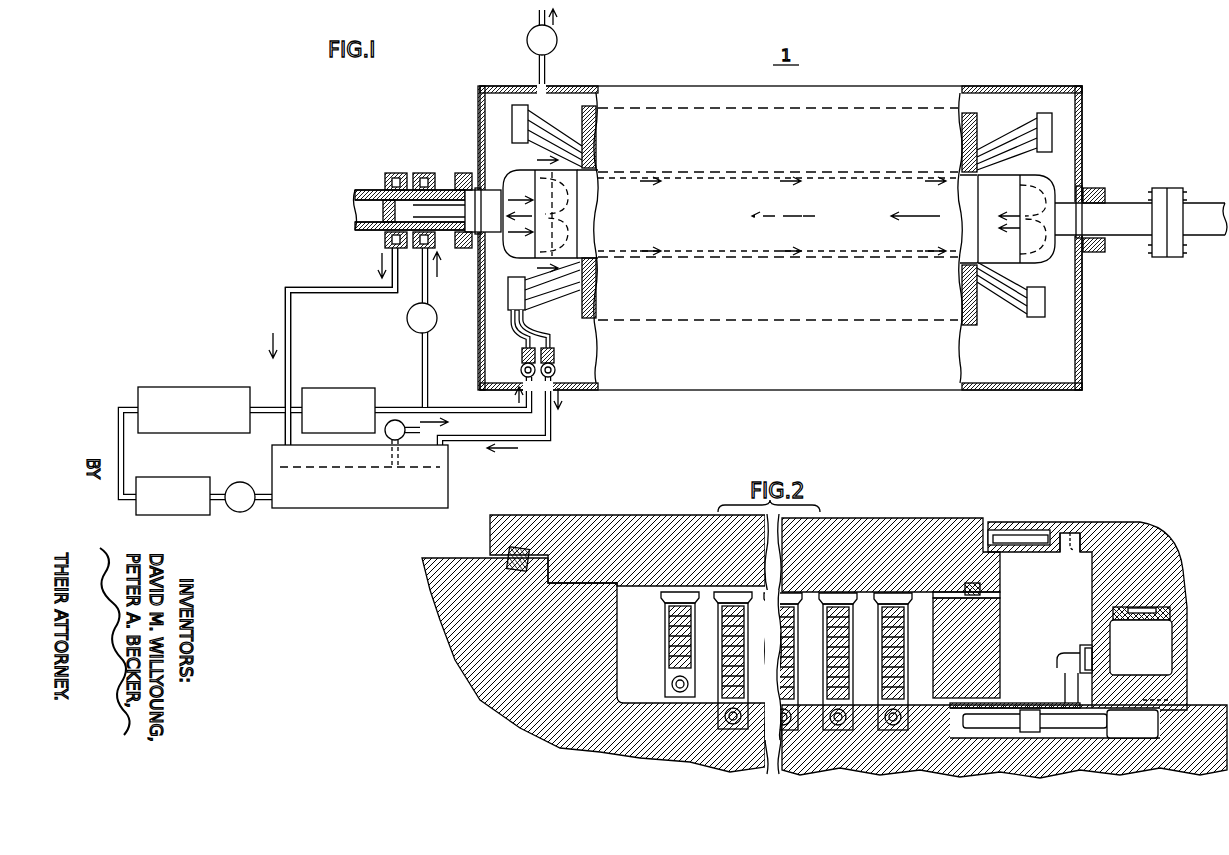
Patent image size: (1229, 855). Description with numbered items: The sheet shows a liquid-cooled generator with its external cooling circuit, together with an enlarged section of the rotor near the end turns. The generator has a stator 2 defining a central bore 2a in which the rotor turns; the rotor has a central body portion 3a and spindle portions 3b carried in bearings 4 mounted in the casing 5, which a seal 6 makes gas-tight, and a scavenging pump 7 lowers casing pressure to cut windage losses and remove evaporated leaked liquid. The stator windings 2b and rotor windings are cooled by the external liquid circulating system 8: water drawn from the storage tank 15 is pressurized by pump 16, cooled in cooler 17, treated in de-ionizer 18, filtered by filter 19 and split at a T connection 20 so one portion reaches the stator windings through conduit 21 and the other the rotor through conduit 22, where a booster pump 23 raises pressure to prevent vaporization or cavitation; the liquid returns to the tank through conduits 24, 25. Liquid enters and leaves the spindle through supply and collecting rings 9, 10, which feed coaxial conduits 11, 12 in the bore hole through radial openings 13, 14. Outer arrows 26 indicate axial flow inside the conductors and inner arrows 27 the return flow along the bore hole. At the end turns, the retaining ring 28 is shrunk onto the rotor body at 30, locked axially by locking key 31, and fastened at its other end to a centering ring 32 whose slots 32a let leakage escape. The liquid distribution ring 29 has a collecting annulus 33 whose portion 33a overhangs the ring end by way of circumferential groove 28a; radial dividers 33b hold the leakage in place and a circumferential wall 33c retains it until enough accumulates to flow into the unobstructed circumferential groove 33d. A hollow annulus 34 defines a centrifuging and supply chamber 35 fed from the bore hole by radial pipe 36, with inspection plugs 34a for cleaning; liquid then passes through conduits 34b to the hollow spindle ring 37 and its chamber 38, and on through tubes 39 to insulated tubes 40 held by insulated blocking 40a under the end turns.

In FIG. 1, the stator 2 is at (585, 318).
In FIG. 1, the central bore 2a is at (848, 260).
In FIG. 1, the stator windings 2b is at (548, 293).
In FIG. 1, the rotor body portion 3a is at (595, 195).
In FIG. 2, the rotor body portion 3a is at (463, 557).
In FIG. 1, the spindle portions 3b is at (1060, 256).
In FIG. 2, the spindle portions 3b is at (912, 706).
In FIG. 1, the locking key 31 is at (843, 177).
In FIG. 2, the locking key 31 is at (517, 547).
In FIG. 1, the bearings 4 is at (465, 172).
In FIG. 1, the casing 5 is at (478, 104).
In FIG. 1, the seal 6 is at (471, 256).
In FIG. 1, the scavenging pump 7 is at (557, 41).
In FIG. 1, the external liquid circulating system 8 is at (240, 461).
In FIG. 1, the supply ring 9 is at (422, 179).
In FIG. 1, the collecting ring 10 is at (392, 178).
In FIG. 1, the coaxial conduit 11 is at (444, 238).
In FIG. 1, the coaxial conduit 12 is at (445, 205).
In FIG. 1, the radial opening 13 is at (414, 178).
In FIG. 1, the radial opening 14 is at (386, 181).
In FIG. 1, the storage tank 15 is at (448, 479).
In FIG. 1, the pump 16 is at (237, 484).
In FIG. 1, the cooler 17 is at (167, 476).
In FIG. 1, the de-ionizer 18 is at (196, 387).
In FIG. 1, the filter 19 is at (340, 388).
In FIG. 1, the T connection 20 is at (429, 405).
In FIG. 1, the conduit 21 is at (492, 406).
In FIG. 1, the conduit 22 is at (429, 355).
In FIG. 1, the booster pump 23 is at (407, 320).
In FIG. 1, the conduit 24 is at (550, 427).
In FIG. 1, the conduit 25 is at (345, 280).
In FIG. 1, the outer arrows 26 is at (637, 177).
In FIG. 1, the inner arrows 27 is at (801, 208).
In FIG. 1, the retaining ring 28 is at (533, 177).
In FIG. 2, the retaining ring 28 is at (892, 517).
In FIG. 2, the circumferential groove 28a is at (1003, 555).
In FIG. 1, the liquid distribution ring 29 is at (515, 179).
In FIG. 2, the liquid distribution ring 29 is at (1184, 562).
In FIG. 2, the shrink fit 30 is at (576, 580).
In FIG. 2, the centering ring 32 is at (1000, 637).
In FIG. 2, the slots 32a is at (1000, 597).
In FIG. 2, the collecting annulus 33 is at (1138, 528).
In FIG. 2, the overhanging portion 33a is at (1012, 522).
In FIG. 2, the radial dividers 33b is at (1050, 540).
In FIG. 2, the circumferential wall 33c is at (1066, 553).
In FIG. 2, the circumferential groove 33d is at (1074, 545).
In FIG. 2, the hollow annulus 34 is at (1176, 693).
In FIG. 2, the inspection plugs 34a is at (1140, 620).
In FIG. 2, the conduits 34b is at (1178, 705).
In FIG. 2, the centrifuging and supply chamber 35 is at (1153, 667).
In FIG. 2, the radial pipe 36 is at (1052, 665).
In FIG. 2, the hollow spindle ring 37 is at (1133, 738).
In FIG. 2, the chamber 38 is at (1142, 730).
In FIG. 2, the tubes 39 is at (1040, 712).
In FIG. 2, the insulated tubes 40 is at (1001, 714).
In FIG. 2, the insulated blocking 40a is at (950, 712).